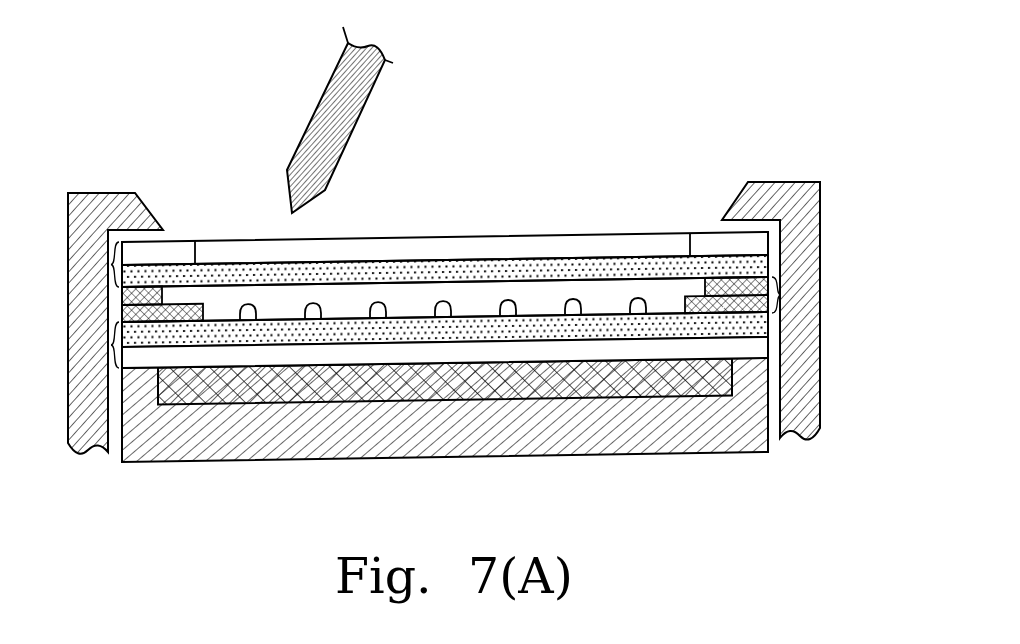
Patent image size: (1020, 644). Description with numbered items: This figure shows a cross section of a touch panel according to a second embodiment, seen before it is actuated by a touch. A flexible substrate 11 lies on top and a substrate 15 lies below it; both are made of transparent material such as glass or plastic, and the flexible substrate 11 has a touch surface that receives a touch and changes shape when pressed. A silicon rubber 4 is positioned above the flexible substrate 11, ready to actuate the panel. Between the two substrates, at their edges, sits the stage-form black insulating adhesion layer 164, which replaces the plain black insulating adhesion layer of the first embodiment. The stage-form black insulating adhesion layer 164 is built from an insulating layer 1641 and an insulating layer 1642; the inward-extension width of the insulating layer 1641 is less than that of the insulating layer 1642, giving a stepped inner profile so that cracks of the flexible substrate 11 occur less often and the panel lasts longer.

The silicon rubber 4 is at (333, 126).
The flexible substrate 11 is at (113, 253).
The substrate 15 is at (113, 360).
The stage-form black insulating adhesion layer 164 is at (782, 300).
The insulating layer 1641 is at (740, 287).
The insulating layer 1642 is at (737, 303).